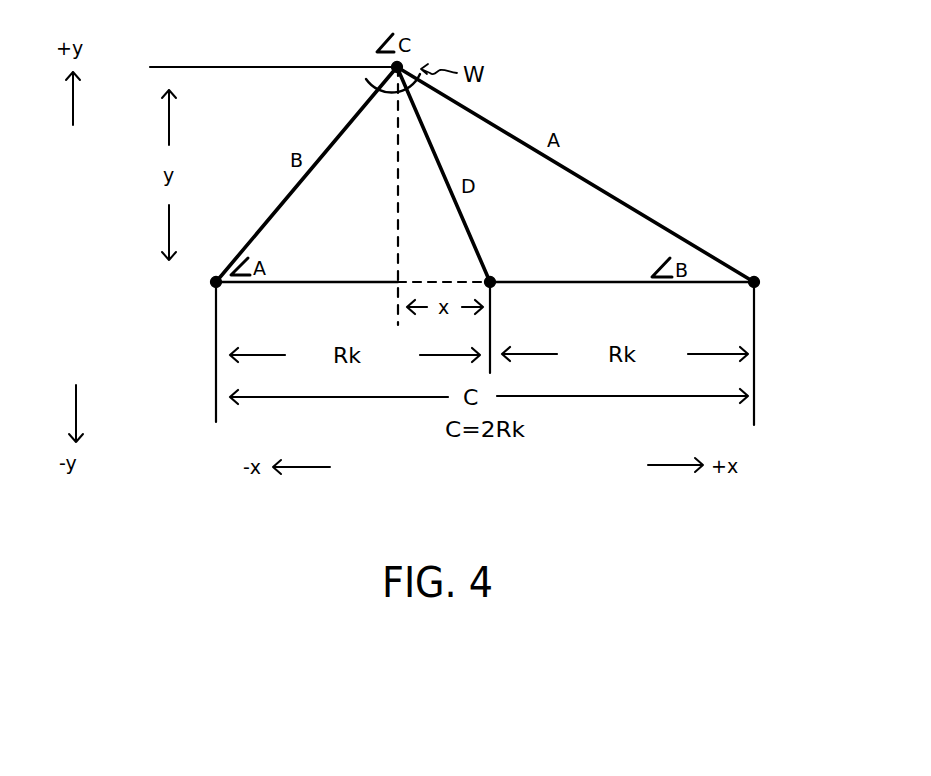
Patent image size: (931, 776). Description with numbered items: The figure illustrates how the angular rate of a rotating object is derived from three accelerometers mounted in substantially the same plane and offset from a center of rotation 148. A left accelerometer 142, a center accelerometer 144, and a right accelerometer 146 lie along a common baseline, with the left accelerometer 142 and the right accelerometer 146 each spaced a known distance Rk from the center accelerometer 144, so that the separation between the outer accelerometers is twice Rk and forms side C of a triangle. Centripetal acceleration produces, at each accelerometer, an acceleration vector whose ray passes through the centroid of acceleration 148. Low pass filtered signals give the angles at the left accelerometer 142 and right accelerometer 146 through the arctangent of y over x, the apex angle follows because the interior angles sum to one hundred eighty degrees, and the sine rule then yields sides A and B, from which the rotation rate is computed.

The left accelerometer 142 is at (213, 285).
The center accelerometer 144 is at (493, 284).
The right accelerometer 146 is at (757, 278).
The center of rotation 148 is at (404, 62).